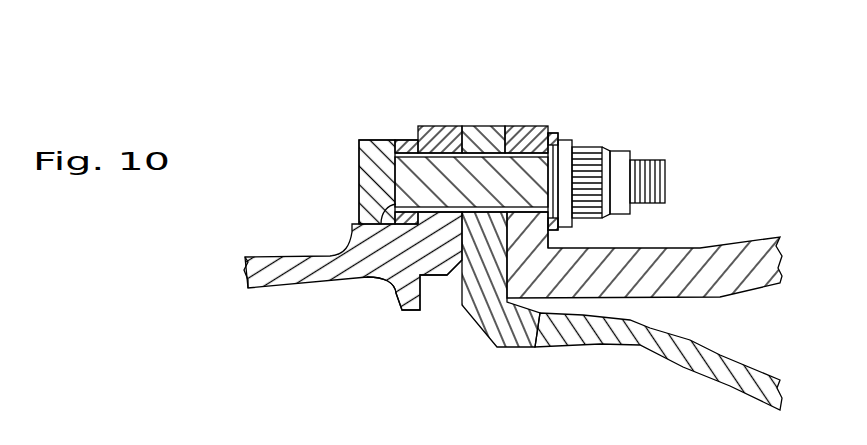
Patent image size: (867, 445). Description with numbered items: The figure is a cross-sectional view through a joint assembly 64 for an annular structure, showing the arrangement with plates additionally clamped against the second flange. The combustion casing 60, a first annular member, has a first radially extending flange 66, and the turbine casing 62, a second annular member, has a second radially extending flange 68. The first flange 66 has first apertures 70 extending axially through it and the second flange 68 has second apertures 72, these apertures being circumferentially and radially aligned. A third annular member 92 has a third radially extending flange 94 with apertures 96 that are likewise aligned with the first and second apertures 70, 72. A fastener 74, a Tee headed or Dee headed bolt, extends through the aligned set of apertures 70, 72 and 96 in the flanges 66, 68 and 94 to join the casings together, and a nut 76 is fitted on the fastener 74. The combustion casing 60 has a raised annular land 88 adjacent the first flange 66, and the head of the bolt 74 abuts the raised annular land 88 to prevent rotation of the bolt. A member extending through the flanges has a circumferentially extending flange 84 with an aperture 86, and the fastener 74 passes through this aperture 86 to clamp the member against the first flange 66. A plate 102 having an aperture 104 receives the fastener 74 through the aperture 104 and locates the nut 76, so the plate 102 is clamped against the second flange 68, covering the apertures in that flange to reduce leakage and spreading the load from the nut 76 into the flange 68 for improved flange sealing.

The combustion casing 60 is at (256, 260).
The turbine casing 62 is at (740, 250).
The joint assembly 64 is at (563, 98).
The first radially extending flange 66 is at (443, 137).
The second radially extending flange 68 is at (525, 137).
The first apertures 70 is at (433, 143).
The second apertures 72 is at (553, 160).
The fastener 74 is at (368, 168).
The nut 76 is at (610, 150).
The circumferentially extending flange 84 is at (408, 147).
The aperture 86 is at (379, 228).
The raised annular land 88 is at (357, 209).
The third annular member 92 is at (720, 370).
The third radially extending flange 94 is at (482, 135).
The apertures 96 is at (472, 215).
The plate 102 is at (553, 229).
The aperture 104 is at (602, 146).